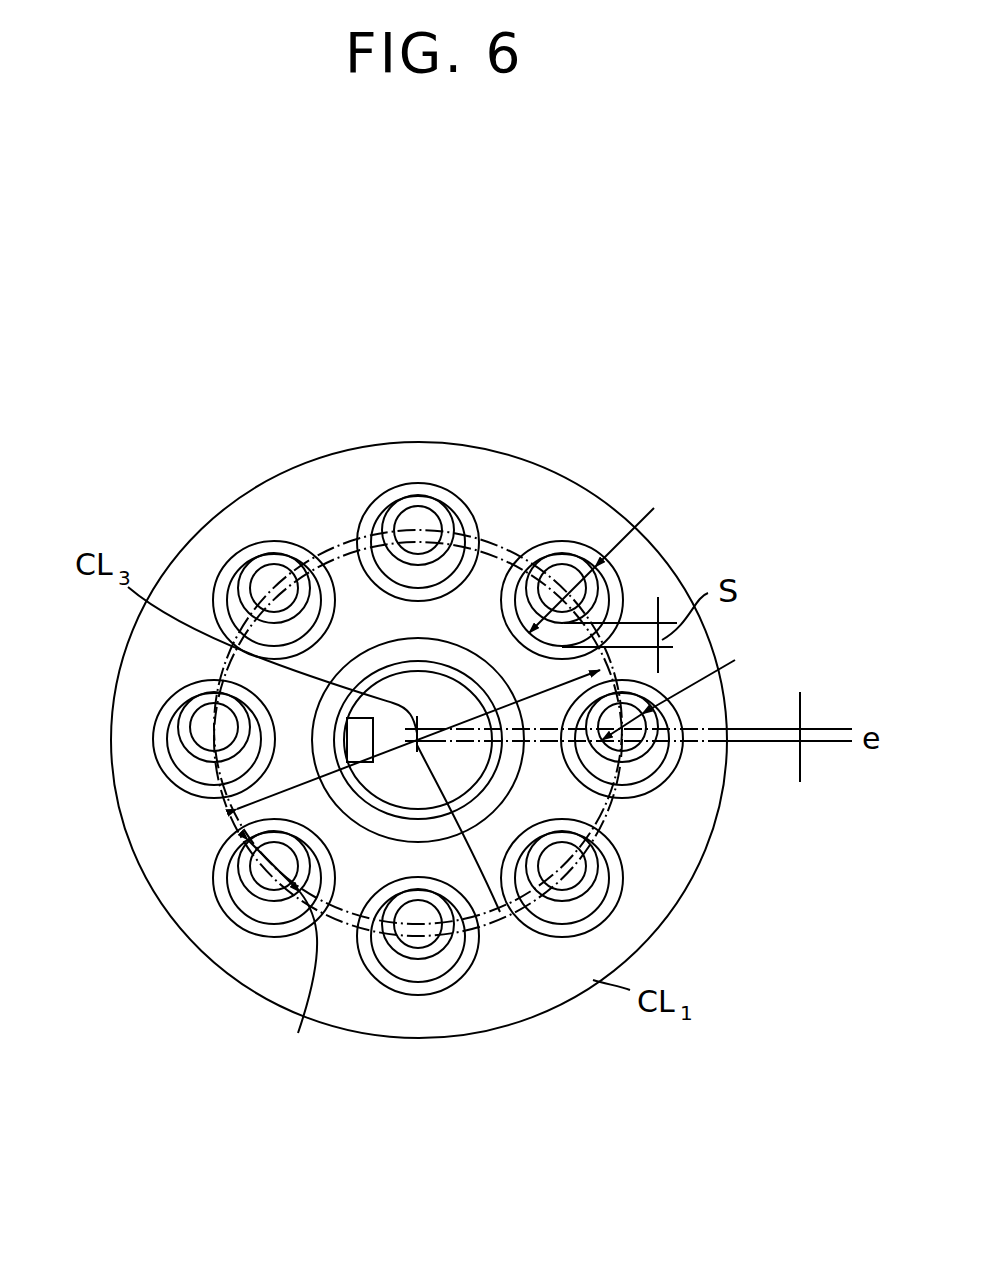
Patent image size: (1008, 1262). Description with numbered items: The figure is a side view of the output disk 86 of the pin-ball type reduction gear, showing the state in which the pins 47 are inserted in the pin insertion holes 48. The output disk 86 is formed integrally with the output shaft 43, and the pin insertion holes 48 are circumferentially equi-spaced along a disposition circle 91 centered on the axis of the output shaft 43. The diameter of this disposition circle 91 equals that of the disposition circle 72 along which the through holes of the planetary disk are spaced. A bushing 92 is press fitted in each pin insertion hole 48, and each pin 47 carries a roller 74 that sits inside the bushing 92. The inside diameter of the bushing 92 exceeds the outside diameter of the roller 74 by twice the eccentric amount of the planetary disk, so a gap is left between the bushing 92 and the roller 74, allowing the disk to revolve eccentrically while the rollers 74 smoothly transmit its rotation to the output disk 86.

The output shaft 43 is at (504, 778).
The pin 47 is at (193, 712).
The pin insertion hole 48 is at (450, 490).
The disposition circle 72 is at (303, 517).
The roller 74 is at (638, 753).
The output disk 86 is at (576, 480).
The disposition circle 91 is at (338, 925).
The bushing 92 is at (612, 594).